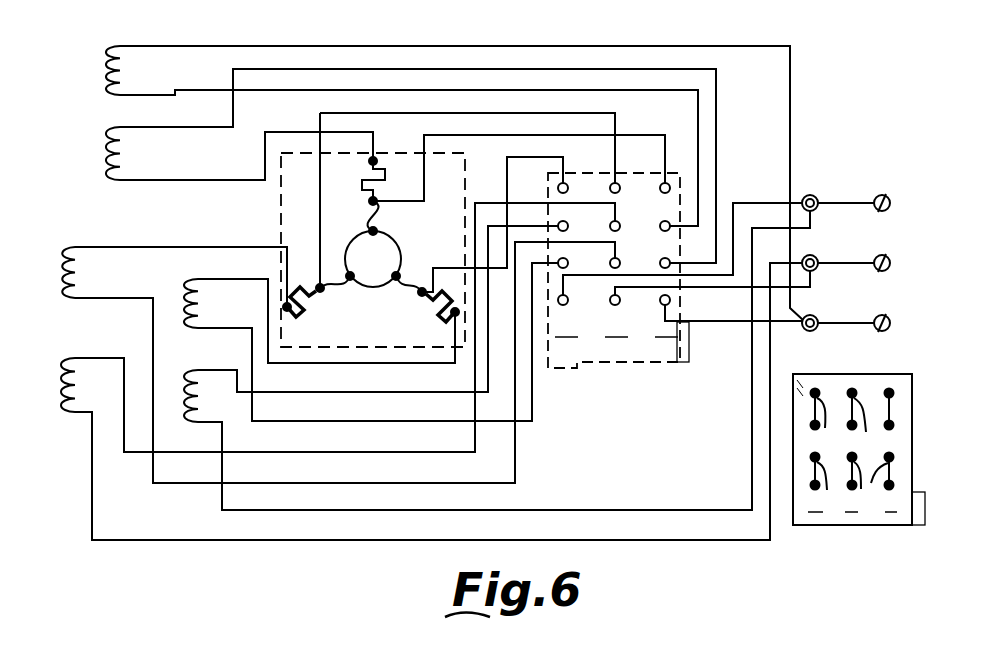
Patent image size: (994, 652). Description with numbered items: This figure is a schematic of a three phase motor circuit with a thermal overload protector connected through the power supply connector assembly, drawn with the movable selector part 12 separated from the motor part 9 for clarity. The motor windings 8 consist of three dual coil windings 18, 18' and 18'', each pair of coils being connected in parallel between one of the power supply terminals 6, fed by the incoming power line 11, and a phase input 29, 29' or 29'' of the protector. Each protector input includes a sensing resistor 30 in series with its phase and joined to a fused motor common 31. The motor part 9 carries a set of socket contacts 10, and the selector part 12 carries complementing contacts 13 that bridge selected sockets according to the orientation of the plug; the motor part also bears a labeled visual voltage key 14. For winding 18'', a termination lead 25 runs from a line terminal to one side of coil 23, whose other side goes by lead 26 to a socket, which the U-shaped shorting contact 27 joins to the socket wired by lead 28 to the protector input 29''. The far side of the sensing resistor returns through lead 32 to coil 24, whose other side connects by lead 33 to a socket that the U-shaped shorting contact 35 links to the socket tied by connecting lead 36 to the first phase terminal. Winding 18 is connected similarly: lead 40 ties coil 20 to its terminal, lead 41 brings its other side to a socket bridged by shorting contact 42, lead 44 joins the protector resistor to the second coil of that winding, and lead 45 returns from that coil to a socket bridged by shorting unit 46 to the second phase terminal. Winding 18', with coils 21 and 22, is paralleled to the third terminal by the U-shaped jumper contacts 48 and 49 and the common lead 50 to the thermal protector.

The power supply terminals 6 is at (817, 316).
The motor windings 8 is at (84, 483).
The motor part 9 is at (647, 367).
The socket contacts 10 is at (568, 185).
The power line 11 is at (893, 189).
The movable selector part 12 is at (833, 534).
The complementing contacts 13 is at (890, 392).
The visual voltage key 14 is at (799, 376).
The dual coil winding 18 is at (43, 351).
The dual coil winding 18' is at (77, 111).
The dual coil winding 18'' is at (203, 353).
The coil 20 is at (75, 398).
The coil 21 is at (122, 80).
The coil 22 is at (122, 163).
The coil 23 is at (189, 416).
The coil 24 is at (202, 310).
The termination lead 25 is at (568, 510).
The lead 26 is at (368, 394).
The U-shaped shorting contact 27 is at (828, 423).
The lead 28 is at (507, 172).
The phase input 29 is at (318, 303).
The phase input 29' is at (401, 218).
The phase input 29'' is at (417, 304).
The sensing resistor 30 is at (452, 317).
The fused motor common 31 is at (383, 272).
The lead 32 is at (308, 368).
The lead 33 is at (349, 424).
The U-shaped shorting contact 35 is at (825, 483).
The connecting lead 36 is at (792, 123).
The lead 40 is at (636, 544).
The lead 41 is at (124, 360).
The U-shaped shorting contact 42 is at (869, 423).
The lead 44 is at (195, 247).
The lead 45 is at (125, 298).
The shorting unit 46 is at (866, 483).
The U-shaped jumper contact 48 is at (888, 423).
The U-shaped jumper contact 49 is at (875, 471).
The common lead 50 is at (190, 180).